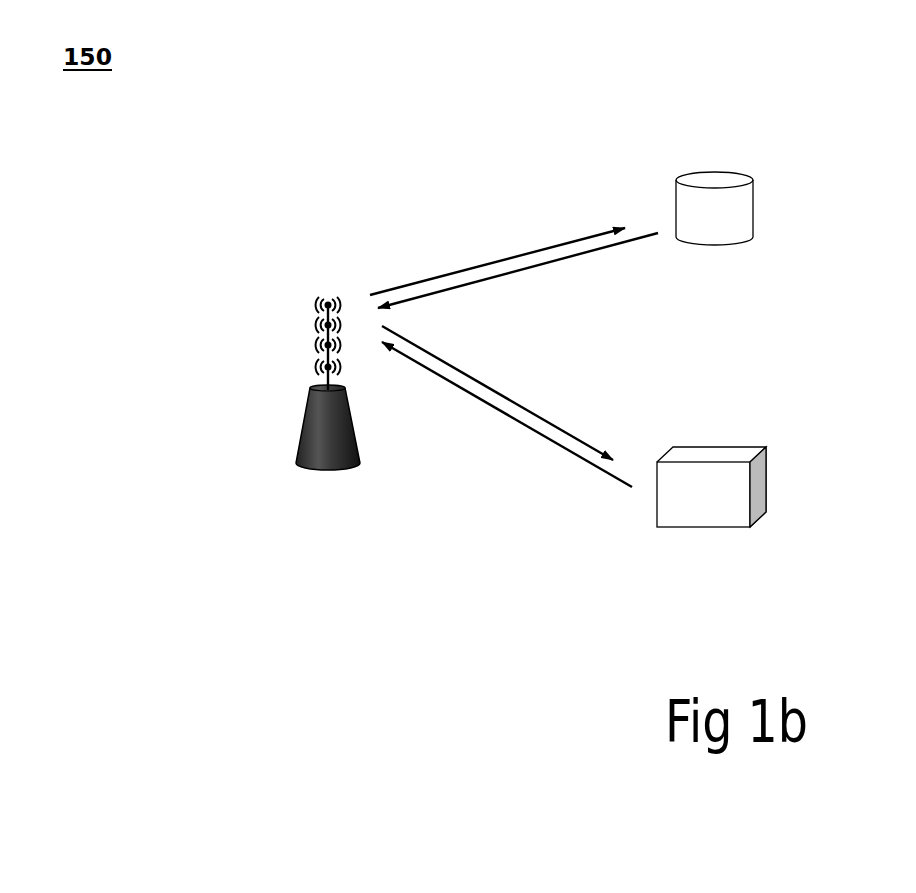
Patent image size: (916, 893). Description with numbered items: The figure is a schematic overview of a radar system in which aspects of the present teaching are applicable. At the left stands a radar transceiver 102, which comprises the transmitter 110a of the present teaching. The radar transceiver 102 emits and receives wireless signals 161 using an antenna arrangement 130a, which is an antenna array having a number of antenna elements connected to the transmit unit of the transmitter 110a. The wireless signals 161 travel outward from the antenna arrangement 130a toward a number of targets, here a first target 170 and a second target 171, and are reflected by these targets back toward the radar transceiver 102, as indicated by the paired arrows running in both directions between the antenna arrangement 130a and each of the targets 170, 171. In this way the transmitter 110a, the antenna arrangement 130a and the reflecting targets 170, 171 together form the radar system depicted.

The radar transceiver 102 is at (247, 483).
The transmitter 110a is at (295, 410).
The antenna arrangement 130a is at (315, 280).
The wireless signals 161 is at (470, 263).
The target 170 is at (782, 188).
The target 171 is at (763, 427).